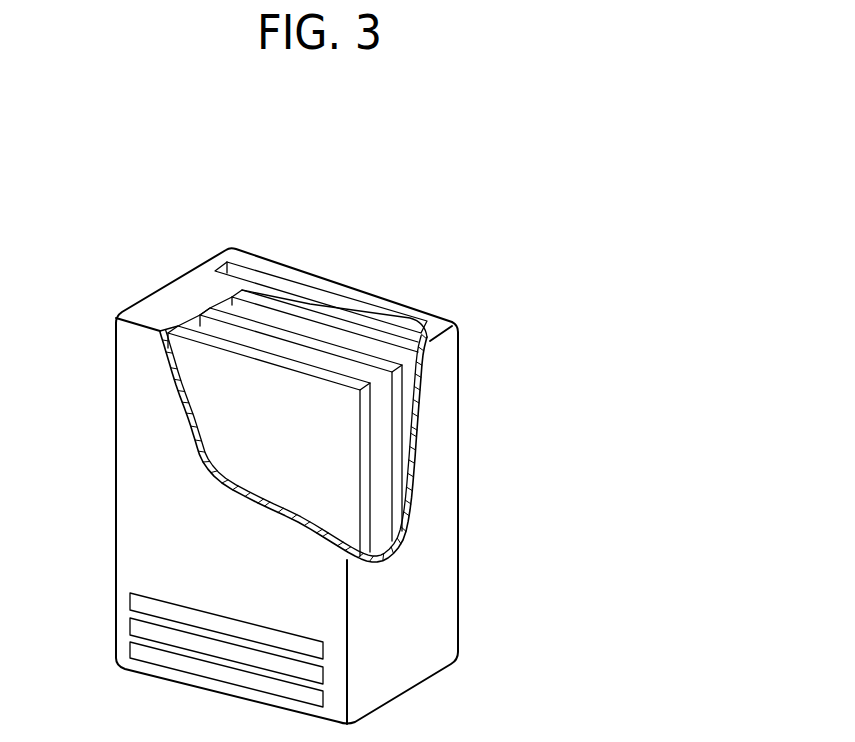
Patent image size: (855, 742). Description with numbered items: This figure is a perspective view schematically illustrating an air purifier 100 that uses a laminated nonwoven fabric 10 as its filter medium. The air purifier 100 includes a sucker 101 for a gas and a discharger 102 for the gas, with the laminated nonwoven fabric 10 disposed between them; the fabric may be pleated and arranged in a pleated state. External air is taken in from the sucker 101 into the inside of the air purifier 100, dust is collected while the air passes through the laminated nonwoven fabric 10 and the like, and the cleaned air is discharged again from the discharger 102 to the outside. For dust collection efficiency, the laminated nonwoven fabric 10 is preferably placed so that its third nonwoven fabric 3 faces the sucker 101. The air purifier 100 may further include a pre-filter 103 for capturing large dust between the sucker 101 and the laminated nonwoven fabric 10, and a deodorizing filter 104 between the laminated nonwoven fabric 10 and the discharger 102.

The air purifier 100 is at (399, 213).
The sucker 101 is at (96, 588).
The discharger 102 is at (253, 272).
The pre-filter 103 is at (225, 414).
The laminated nonwoven fabric 10 is at (203, 304).
The deodorizing filter 104 is at (410, 363).
The third nonwoven fabric 3 is at (382, 437).